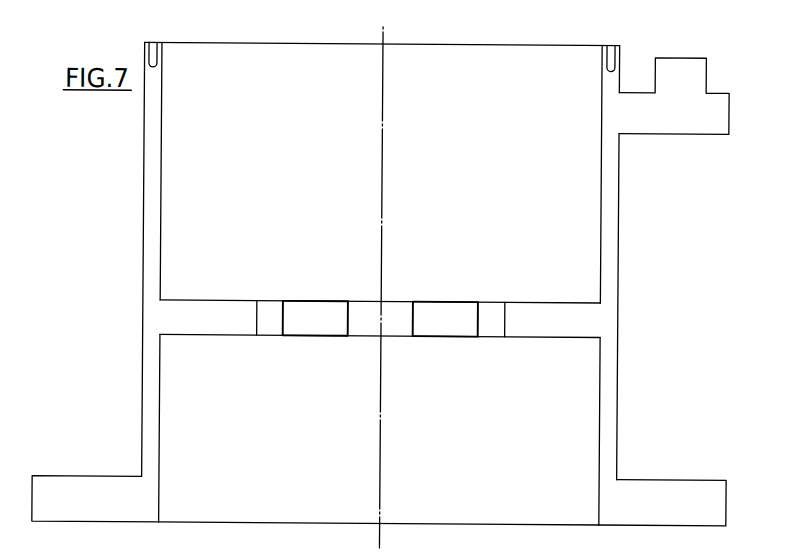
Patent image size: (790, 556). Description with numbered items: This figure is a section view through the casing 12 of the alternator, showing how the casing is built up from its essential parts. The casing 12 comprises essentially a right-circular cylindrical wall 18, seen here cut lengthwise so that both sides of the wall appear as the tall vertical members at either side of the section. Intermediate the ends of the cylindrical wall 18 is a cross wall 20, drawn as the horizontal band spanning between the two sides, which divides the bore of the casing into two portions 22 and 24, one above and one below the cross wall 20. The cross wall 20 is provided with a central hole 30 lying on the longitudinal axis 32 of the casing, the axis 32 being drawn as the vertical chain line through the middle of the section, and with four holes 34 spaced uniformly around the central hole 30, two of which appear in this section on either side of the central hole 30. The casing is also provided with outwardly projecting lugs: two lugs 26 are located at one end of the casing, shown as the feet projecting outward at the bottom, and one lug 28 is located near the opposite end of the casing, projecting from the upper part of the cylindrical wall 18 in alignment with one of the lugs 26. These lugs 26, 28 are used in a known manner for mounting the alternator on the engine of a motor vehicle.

The casing 12 is at (637, 335).
The right-circular cylindrical wall 18 is at (609, 238).
The cross wall 20 is at (532, 320).
The portion of the bore 22 is at (379, 429).
The portion of the bore 24 is at (292, 64).
The lugs 26 is at (65, 489).
The lug 28 is at (654, 126).
The central hole 30 is at (365, 313).
The longitudinal axis 32 is at (383, 459).
The holes 34 is at (266, 318).